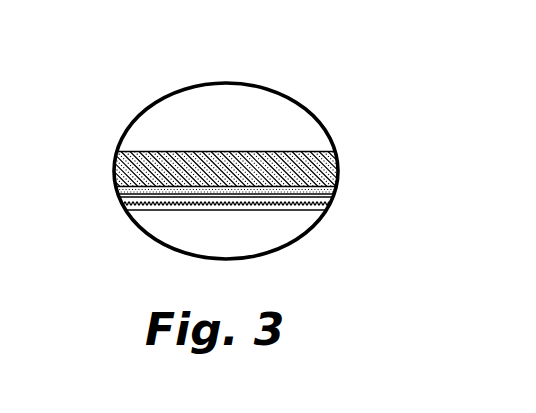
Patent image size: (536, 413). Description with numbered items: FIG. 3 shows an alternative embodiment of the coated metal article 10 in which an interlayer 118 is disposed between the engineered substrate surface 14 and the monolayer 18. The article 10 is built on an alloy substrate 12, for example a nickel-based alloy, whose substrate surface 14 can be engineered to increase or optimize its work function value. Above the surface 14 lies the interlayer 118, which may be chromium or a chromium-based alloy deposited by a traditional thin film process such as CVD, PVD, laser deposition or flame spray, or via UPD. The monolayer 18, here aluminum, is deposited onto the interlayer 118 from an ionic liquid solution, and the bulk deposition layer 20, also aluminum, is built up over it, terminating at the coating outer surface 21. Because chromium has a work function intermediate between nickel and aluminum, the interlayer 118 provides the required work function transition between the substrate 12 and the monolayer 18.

The article 10 is at (357, 97).
The alloy substrate 12 is at (241, 245).
The engineered substrate surface 14 is at (290, 209).
The monolayer 18 is at (121, 192).
The bulk deposition layer 20 is at (324, 171).
The coating outer surface 21 is at (252, 151).
The interlayer 118 is at (326, 199).